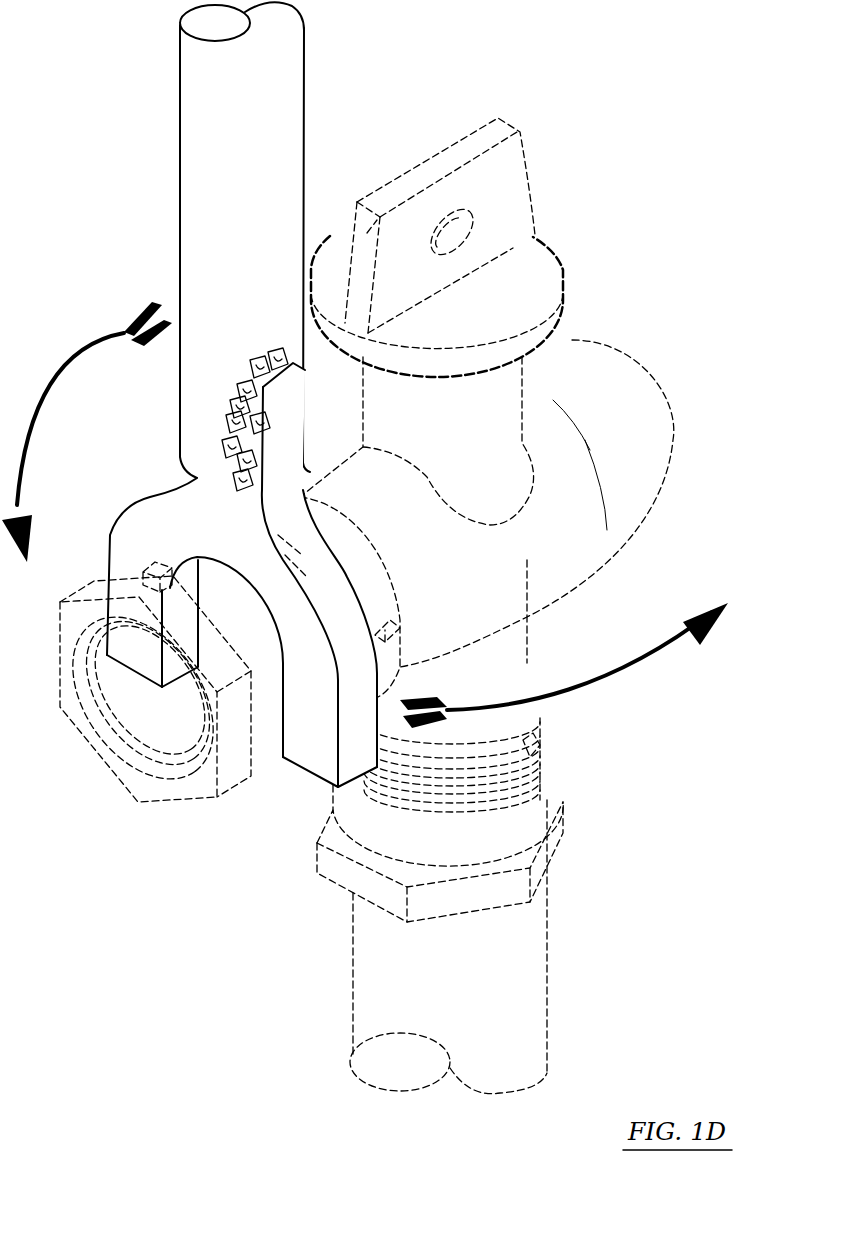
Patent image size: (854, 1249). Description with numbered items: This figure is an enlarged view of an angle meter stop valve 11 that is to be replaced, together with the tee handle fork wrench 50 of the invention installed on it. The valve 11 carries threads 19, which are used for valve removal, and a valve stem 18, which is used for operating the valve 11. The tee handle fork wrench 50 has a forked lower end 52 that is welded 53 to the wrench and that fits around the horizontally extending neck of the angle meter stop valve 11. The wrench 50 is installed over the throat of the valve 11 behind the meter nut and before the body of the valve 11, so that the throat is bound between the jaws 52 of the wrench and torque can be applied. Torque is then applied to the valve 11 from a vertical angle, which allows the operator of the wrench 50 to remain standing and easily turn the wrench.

The angle meter stop valve 11 is at (558, 557).
The valve stem 18 is at (502, 195).
The threads 19 is at (527, 753).
The tee handle fork wrench 50 is at (178, 163).
The forked lower end 52 is at (160, 518).
The weld 53 is at (225, 430).